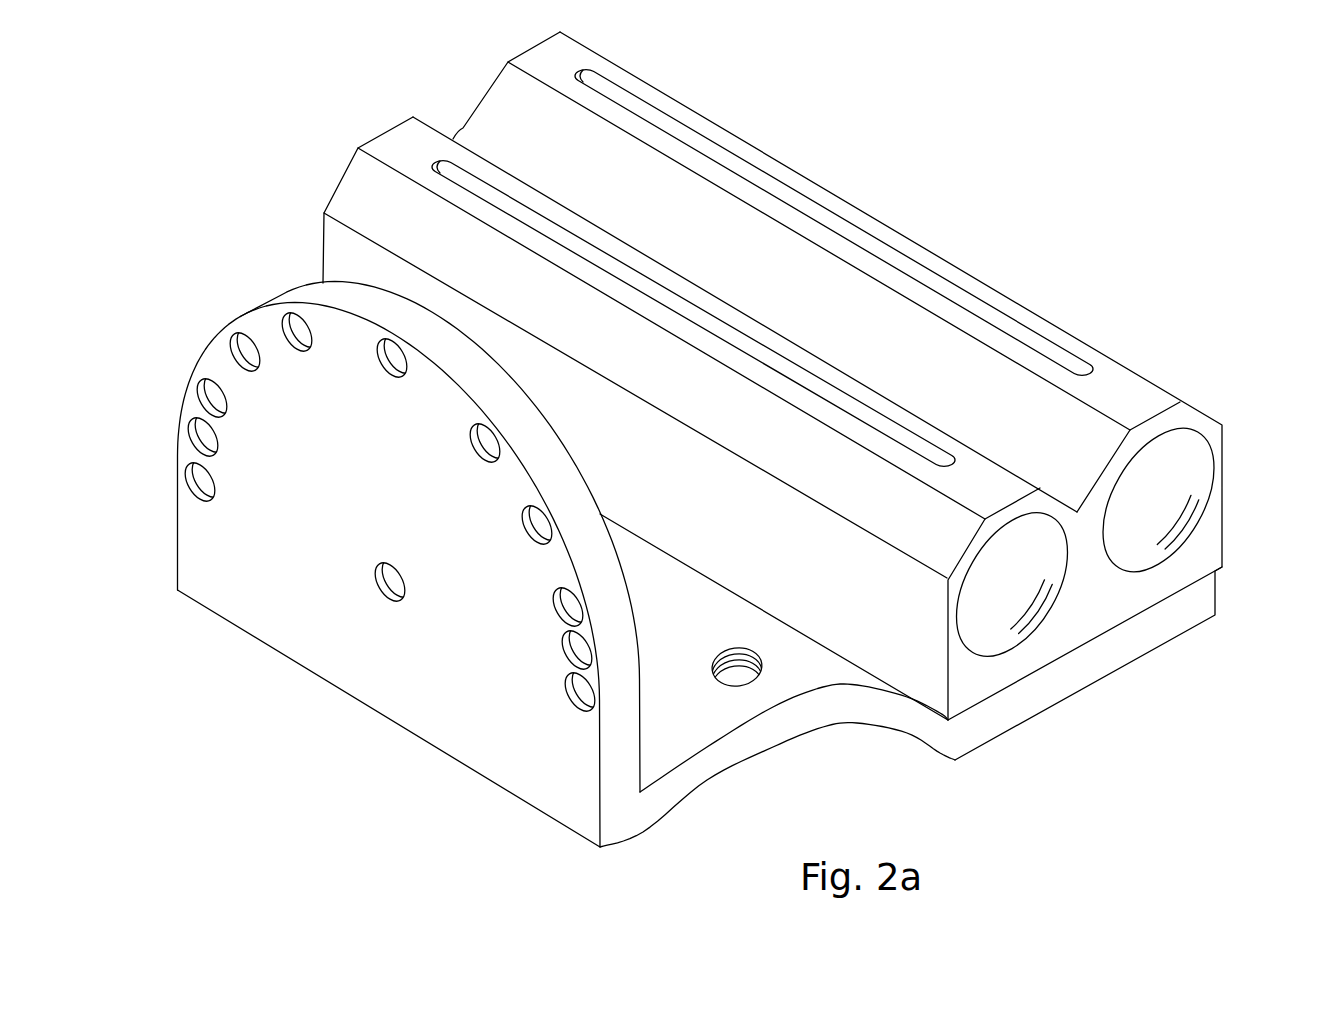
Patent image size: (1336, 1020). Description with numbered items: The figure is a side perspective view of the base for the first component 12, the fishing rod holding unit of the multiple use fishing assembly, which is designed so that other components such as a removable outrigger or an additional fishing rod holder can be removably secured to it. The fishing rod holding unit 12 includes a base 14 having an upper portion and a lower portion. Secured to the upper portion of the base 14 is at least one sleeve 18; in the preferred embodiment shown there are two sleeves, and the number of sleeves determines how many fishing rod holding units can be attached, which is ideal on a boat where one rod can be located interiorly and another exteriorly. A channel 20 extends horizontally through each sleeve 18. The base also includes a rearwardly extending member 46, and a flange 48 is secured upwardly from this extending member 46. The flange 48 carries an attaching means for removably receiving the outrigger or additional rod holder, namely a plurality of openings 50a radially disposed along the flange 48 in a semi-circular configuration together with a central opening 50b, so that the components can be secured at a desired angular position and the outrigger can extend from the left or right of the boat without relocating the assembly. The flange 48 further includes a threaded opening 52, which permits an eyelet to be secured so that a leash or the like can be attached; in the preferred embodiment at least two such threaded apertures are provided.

The first component 12 is at (1031, 288).
The base 14 is at (1147, 637).
The sleeve 18 is at (1190, 458).
The channel 20 is at (768, 183).
The rearwardly extending member 46 is at (673, 722).
The flange 48 is at (263, 617).
The openings 50a is at (205, 380).
The central opening 50b is at (400, 585).
The threaded opening 52 is at (758, 672).